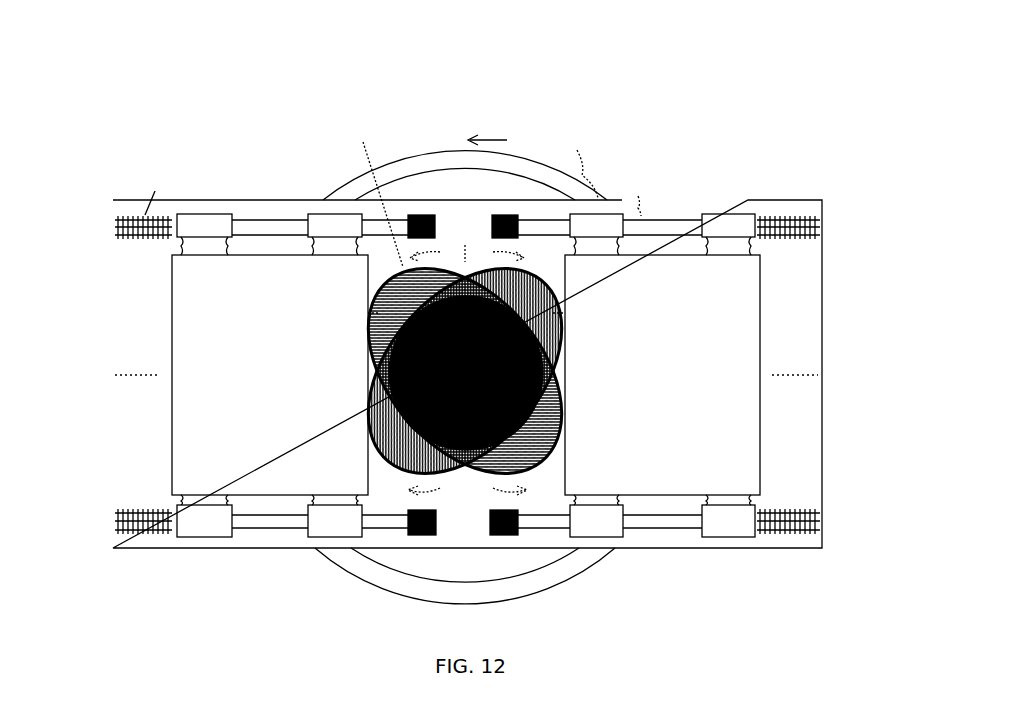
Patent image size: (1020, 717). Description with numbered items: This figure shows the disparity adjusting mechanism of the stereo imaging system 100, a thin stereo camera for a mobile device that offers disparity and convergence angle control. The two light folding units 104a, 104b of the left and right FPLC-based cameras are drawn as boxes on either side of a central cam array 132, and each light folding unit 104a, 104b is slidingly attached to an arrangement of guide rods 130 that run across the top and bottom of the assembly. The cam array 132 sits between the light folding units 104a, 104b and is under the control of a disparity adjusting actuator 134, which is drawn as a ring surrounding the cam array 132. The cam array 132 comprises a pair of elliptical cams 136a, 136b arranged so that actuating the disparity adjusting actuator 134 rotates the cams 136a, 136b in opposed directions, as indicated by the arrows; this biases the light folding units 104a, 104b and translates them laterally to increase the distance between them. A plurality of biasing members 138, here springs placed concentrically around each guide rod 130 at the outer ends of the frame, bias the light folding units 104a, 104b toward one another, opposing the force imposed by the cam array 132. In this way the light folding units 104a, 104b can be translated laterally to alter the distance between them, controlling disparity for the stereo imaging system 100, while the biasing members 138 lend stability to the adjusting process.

The stereo imaging system 100 is at (143, 97).
The light-folding unit 104a is at (760, 342).
The light-folding unit 104b is at (172, 353).
The guide rod 130 is at (278, 217).
The cam array 132 is at (465, 463).
The disparity adjusting actuator 134 is at (521, 150).
The elliptical cam 136a is at (560, 315).
The elliptical cam 136b is at (367, 315).
The biasing member 138 is at (137, 212).